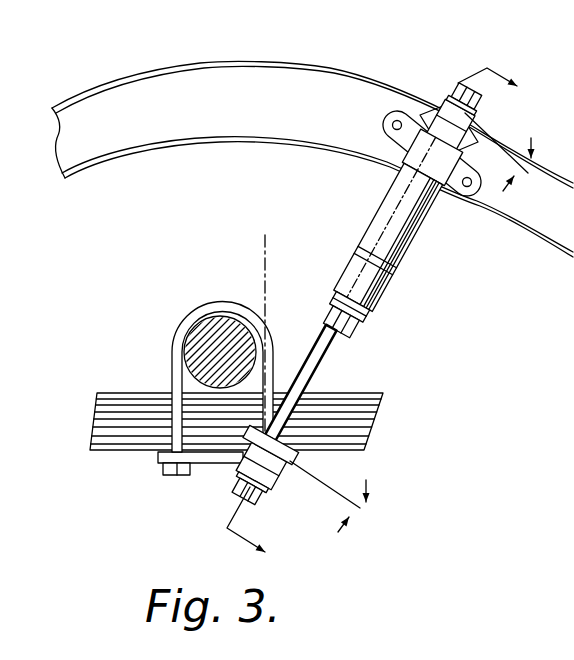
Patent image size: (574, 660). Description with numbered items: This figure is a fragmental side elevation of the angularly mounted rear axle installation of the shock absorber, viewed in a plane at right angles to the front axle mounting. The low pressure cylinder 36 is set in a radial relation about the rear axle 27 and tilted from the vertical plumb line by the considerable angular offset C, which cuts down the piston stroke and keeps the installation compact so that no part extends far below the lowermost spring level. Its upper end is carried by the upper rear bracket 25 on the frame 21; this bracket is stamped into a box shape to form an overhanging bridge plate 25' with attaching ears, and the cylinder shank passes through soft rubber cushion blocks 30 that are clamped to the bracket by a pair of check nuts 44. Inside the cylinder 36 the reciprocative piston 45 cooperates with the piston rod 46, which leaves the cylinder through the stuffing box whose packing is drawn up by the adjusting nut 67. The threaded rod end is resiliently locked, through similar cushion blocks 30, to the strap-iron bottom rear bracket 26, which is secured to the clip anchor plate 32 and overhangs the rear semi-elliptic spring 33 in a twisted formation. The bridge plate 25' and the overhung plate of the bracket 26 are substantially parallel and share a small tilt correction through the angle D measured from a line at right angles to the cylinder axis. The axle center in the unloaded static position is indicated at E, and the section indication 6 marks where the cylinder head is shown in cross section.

The frame 21 is at (297, 76).
The upper rear bracket 25 is at (432, 117).
The overhanging bridge plate 25' is at (449, 91).
The bottom rear bracket 26 is at (288, 464).
The rear axle 27 is at (208, 327).
The cushion block 30 is at (468, 126).
The clip anchor plate 32 is at (210, 462).
The rear semi-elliptic spring 33 is at (133, 440).
The cylinder 36 is at (413, 247).
The check nut 44 is at (460, 90).
The piston 45 is at (368, 245).
The piston rod 46 is at (327, 368).
The adjusting nut 67 is at (361, 328).
The axle center reference position E is at (222, 354).
The angular offset C is at (367, 265).
The tilt correction angle D is at (427, 322).
The section line for Fig. 6 is at (382, 322).